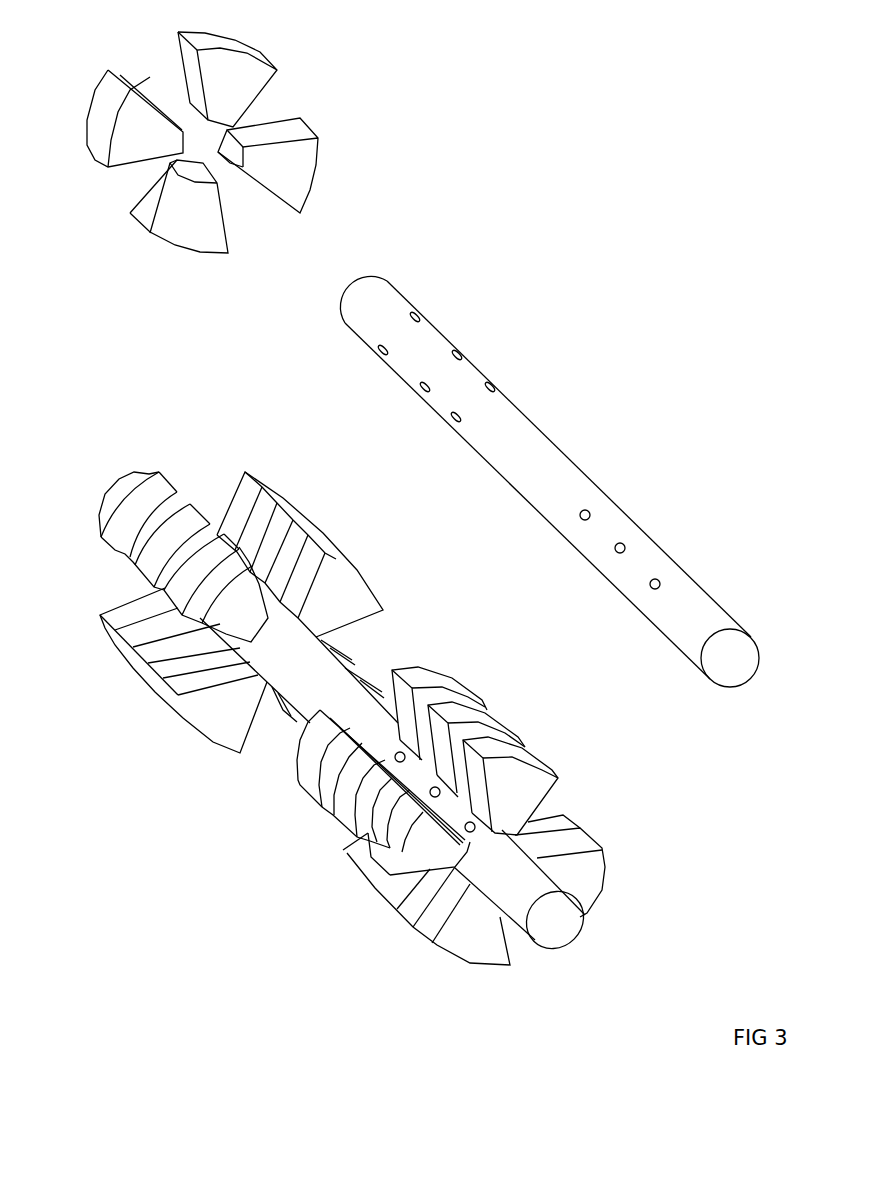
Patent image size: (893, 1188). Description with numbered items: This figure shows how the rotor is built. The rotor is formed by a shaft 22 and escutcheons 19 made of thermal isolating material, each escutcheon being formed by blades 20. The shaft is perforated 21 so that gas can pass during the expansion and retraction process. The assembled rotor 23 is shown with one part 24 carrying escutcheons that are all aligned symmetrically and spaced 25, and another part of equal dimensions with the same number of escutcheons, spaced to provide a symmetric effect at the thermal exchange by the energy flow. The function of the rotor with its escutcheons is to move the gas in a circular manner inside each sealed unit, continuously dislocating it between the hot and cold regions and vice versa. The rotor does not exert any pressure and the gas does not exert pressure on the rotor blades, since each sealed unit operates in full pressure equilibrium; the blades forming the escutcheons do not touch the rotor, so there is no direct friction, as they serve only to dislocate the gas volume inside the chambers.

The escutcheons 19 is at (365, 115).
The blades 20 is at (300, 165).
The perforations 21 is at (430, 380).
The shaft 22 is at (635, 520).
The assembled rotor 23 is at (257, 787).
The brush head 24 is at (175, 686).
The spaced escutcheons 25 is at (378, 857).